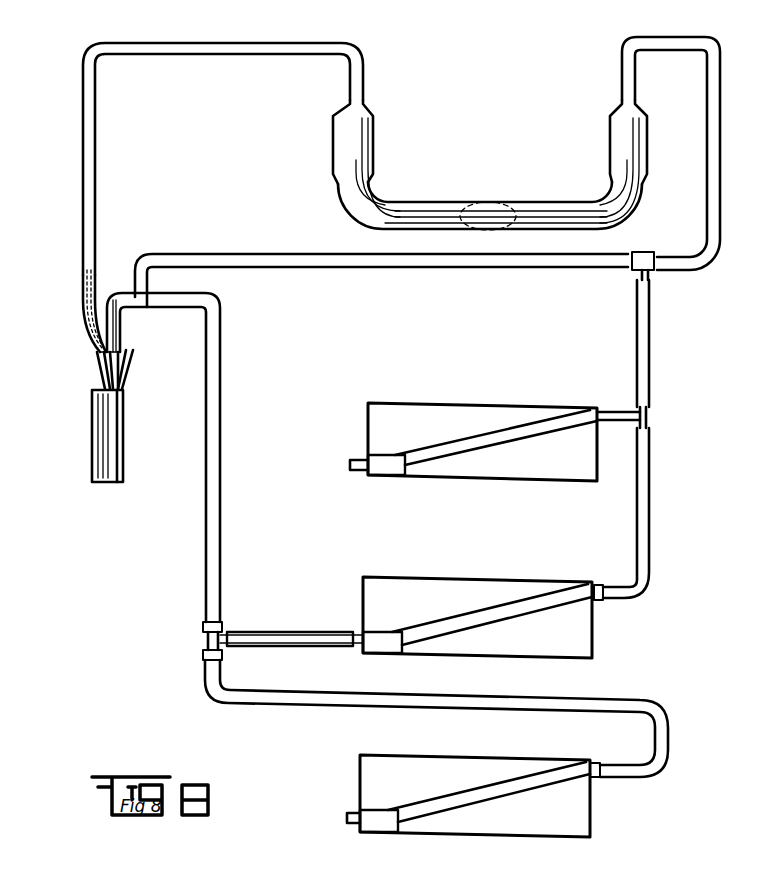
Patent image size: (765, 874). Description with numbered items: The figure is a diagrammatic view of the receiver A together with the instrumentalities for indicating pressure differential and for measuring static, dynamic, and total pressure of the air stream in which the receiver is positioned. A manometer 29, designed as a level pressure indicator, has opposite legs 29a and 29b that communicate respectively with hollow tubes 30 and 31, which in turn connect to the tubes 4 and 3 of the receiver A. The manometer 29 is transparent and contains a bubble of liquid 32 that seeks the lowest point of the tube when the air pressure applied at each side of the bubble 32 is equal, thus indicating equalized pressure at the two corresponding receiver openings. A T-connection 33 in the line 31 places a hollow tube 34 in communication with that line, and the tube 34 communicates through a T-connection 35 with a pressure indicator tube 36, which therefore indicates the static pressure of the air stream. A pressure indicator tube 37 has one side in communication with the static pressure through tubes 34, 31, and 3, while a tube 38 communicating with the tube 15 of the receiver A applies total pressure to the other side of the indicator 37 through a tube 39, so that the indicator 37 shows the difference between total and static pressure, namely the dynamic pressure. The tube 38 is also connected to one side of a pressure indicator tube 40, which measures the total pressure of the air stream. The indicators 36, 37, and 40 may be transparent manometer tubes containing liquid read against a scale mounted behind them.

The tube 3 is at (122, 368).
The tube 4 is at (100, 366).
The tube 15 is at (108, 383).
The receiver A is at (84, 443).
The manometer 29 is at (405, 201).
The leg of manometer 29a is at (341, 138).
The leg of manometer 29b is at (647, 143).
The hollow tube 30 is at (245, 44).
The hollow tube 31 is at (367, 257).
The bubble of liquid 32 is at (474, 201).
The T-connection 33 is at (650, 273).
The hollow tube 34 is at (643, 332).
The T-connection 35 is at (615, 413).
The pressure indicator tube 36 is at (494, 436).
The pressure indicator tube 37 is at (471, 617).
The tube 38 is at (219, 464).
The tube 39 is at (277, 635).
The pressure indicator tube 40 is at (481, 793).